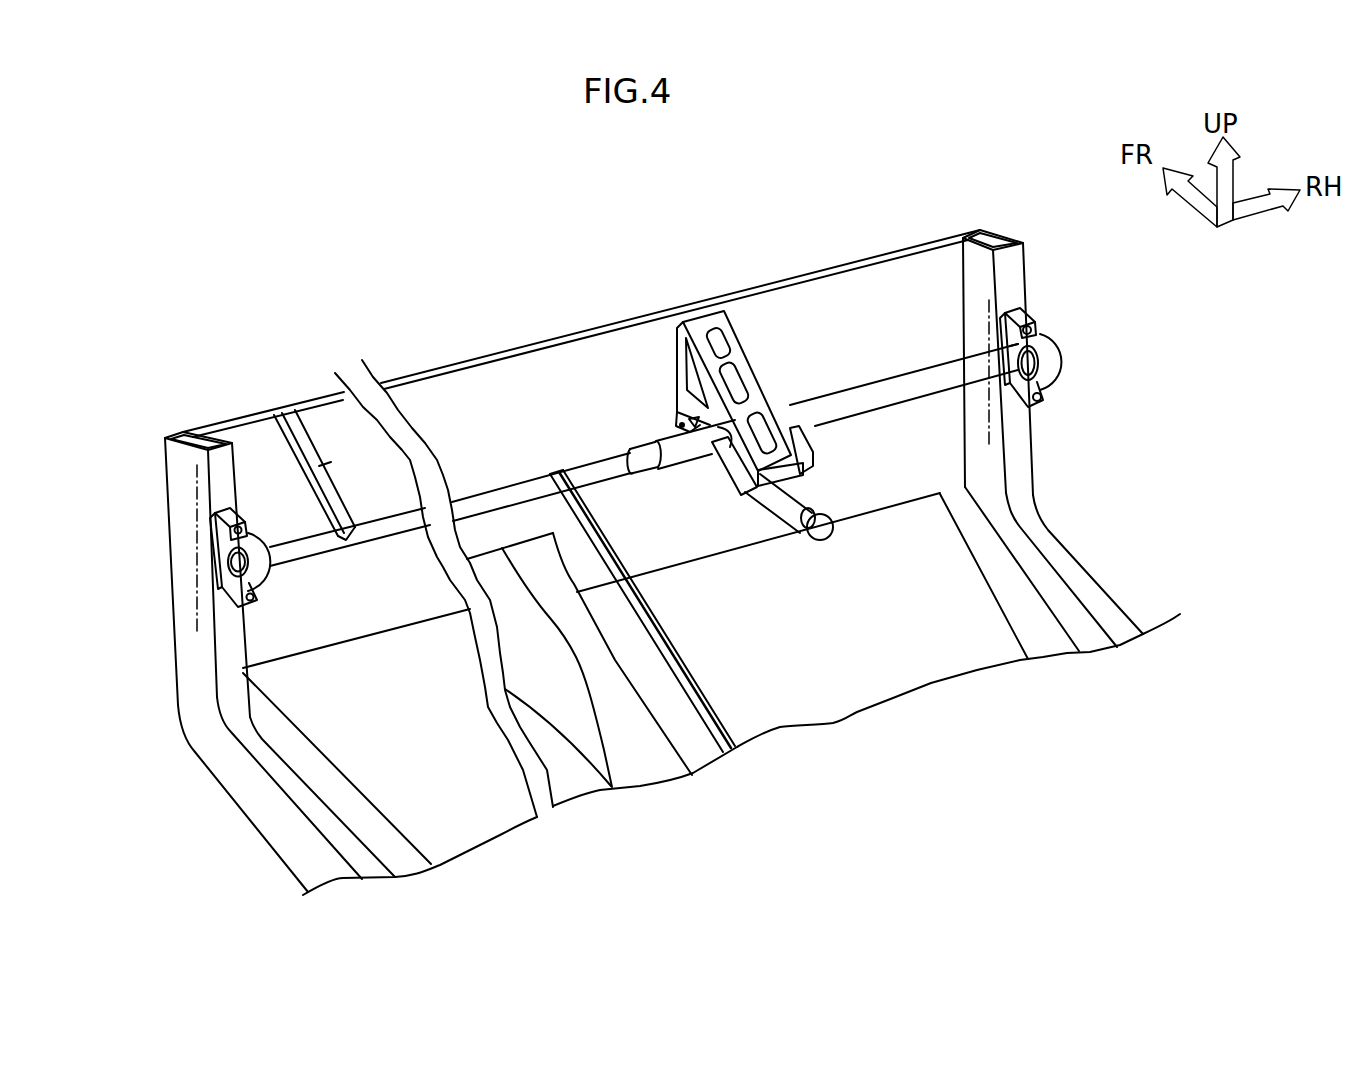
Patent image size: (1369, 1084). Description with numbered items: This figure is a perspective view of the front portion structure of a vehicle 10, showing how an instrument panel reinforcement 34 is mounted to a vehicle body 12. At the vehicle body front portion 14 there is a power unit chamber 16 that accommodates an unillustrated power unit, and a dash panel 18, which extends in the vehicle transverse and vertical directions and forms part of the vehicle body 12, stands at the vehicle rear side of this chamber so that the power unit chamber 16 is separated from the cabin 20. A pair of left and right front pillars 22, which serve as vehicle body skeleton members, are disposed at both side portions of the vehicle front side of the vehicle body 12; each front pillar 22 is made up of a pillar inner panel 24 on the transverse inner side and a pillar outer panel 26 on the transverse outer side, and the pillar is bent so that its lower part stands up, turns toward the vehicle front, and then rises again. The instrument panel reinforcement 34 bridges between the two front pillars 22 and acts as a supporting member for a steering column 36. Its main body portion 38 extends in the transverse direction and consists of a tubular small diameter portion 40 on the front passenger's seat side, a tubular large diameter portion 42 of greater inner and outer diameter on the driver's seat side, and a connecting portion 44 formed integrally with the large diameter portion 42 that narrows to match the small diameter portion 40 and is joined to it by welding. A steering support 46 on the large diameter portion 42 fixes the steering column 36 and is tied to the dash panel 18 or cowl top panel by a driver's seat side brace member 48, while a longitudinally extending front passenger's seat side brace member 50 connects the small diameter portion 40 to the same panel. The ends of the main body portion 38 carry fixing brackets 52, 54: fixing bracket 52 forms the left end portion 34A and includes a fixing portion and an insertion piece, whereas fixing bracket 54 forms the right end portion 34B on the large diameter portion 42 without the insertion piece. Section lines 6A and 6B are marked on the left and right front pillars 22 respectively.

The vehicle 10 is at (660, 511).
The vehicle body 12 is at (377, 218).
The vehicle body front portion 14 is at (393, 303).
The power unit chamber 16 is at (634, 256).
The dash panel 18 is at (830, 298).
The cabin 20 is at (840, 626).
The front pillar 22 is at (170, 425).
The pillar inner panel 24 is at (222, 433).
The pillar outer panel 26 is at (185, 672).
The instrument panel reinforcement 34 is at (587, 434).
The end portion 34A is at (290, 587).
The end portion 34B is at (1086, 379).
The steering column 36 is at (800, 498).
The main body portion 38 is at (831, 385).
The small diameter portion 40 is at (503, 490).
The large diameter portion 42 is at (892, 402).
The connecting portion 44 is at (643, 473).
The steering support 46 is at (730, 486).
The driver's seat side brace member 48 is at (708, 318).
The front passenger's seat side brace member 50 is at (318, 465).
The fixing bracket 52 is at (218, 527).
The fixing bracket 54 is at (1042, 354).
The section line 6A is at (190, 503).
The section line 6B is at (947, 377).